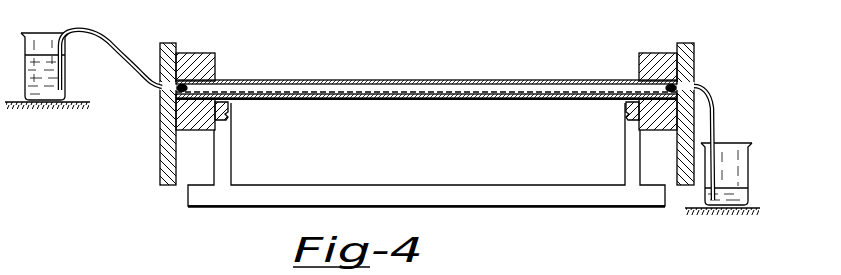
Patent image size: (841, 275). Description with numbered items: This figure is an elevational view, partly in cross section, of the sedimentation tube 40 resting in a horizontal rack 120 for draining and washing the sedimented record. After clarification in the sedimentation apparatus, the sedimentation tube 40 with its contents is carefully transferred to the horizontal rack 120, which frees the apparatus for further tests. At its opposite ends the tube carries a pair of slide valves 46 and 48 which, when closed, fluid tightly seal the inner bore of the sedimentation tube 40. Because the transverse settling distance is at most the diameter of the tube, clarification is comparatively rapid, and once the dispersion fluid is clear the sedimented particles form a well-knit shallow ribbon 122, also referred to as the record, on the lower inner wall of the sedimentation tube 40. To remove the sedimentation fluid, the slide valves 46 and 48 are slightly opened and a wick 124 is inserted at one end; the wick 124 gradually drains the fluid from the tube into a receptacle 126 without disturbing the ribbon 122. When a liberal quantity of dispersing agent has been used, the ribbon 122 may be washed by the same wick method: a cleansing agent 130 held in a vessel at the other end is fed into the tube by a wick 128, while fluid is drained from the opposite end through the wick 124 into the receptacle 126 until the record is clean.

The sedimentation tube 40 is at (373, 80).
The slide valve 46 is at (654, 53).
The slide valve 48 is at (195, 53).
The horizontal rack 120 is at (492, 185).
The ribbon 122 is at (388, 94).
The wick 124 is at (706, 90).
The receptacle 126 is at (722, 143).
The wick 128 is at (113, 50).
The cleansing agent 130 is at (68, 62).